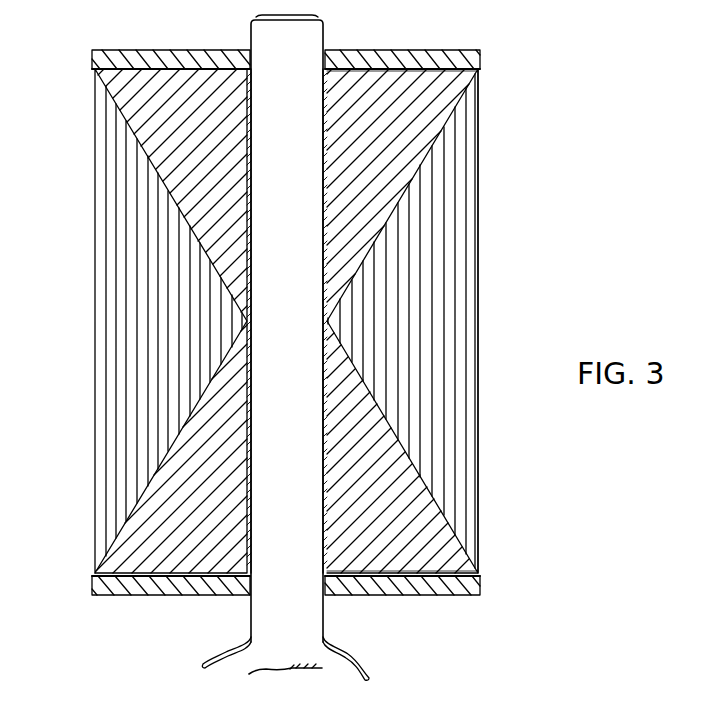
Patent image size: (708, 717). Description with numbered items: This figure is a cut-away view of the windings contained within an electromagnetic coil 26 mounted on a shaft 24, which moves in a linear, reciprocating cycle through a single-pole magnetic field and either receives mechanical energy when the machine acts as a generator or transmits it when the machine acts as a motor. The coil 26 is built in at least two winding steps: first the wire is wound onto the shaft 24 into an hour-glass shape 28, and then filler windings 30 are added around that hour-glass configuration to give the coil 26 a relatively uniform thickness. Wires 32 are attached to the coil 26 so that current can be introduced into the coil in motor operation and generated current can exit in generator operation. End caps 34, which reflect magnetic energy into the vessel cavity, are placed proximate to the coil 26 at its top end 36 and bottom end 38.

The shaft 24 is at (262, 668).
The electromagnetic coil 26 is at (478, 288).
The hour-glass shape 28 is at (433, 123).
The filler windings 30 is at (100, 210).
The wires 32 is at (218, 660).
The end caps 34 is at (417, 57).
The top end 36 is at (480, 70).
The bottom end 38 is at (478, 572).